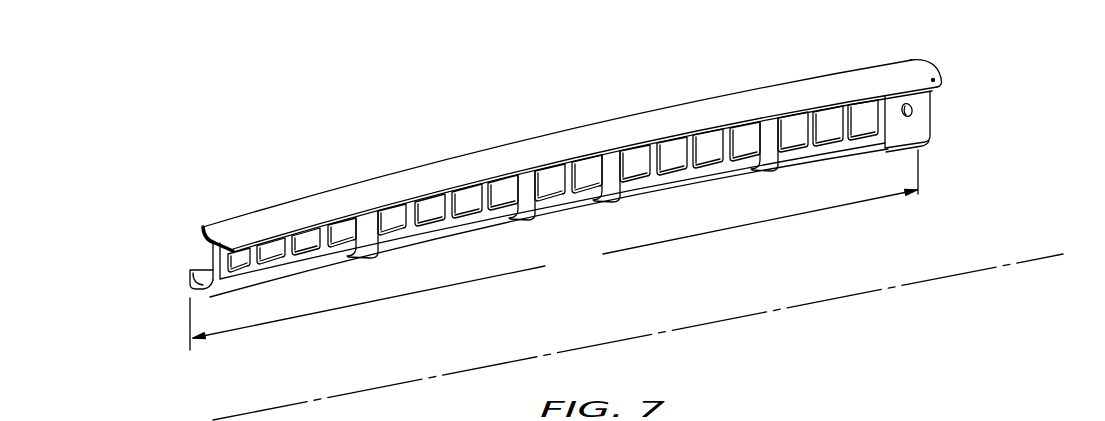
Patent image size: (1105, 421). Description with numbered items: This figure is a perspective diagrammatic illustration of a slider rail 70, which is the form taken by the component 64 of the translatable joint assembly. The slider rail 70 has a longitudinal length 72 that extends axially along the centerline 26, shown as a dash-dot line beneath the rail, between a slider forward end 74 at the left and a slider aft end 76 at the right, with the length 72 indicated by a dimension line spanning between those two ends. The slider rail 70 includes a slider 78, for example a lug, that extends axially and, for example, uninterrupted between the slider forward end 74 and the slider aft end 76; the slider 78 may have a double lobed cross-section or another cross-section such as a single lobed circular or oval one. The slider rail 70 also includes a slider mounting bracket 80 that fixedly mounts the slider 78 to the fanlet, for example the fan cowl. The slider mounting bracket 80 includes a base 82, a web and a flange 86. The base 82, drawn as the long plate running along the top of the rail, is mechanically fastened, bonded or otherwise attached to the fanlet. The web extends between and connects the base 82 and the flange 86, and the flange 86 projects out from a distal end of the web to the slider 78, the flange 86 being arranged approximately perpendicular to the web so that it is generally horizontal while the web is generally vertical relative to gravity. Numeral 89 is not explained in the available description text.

The slider rail 70 is at (403, 125).
The component 64 is at (575, 173).
The base 82 is at (880, 64).
The slider aft end 76 is at (918, 60).
The slider forward end 74 is at (200, 232).
The slider 78 is at (190, 278).
The flange 86 is at (207, 289).
The slider mounting bracket 80 is at (952, 103).
The end wall 89 is at (932, 128).
The longitudinal length 72 is at (554, 250).
The centerline 26 is at (1040, 257).